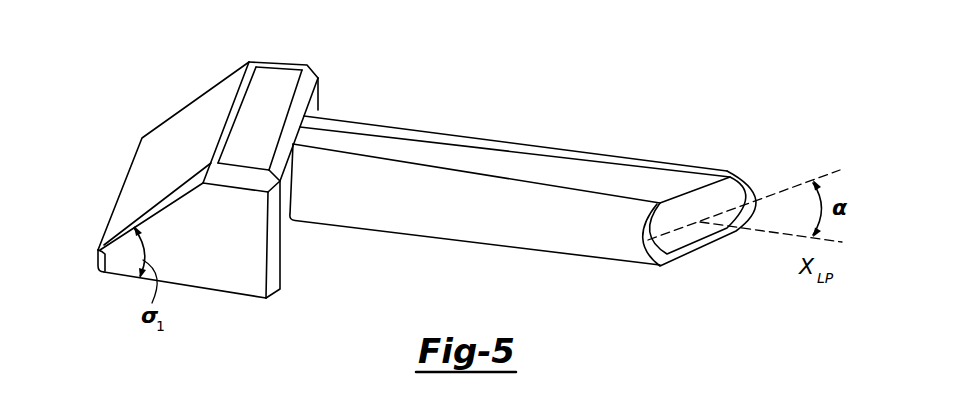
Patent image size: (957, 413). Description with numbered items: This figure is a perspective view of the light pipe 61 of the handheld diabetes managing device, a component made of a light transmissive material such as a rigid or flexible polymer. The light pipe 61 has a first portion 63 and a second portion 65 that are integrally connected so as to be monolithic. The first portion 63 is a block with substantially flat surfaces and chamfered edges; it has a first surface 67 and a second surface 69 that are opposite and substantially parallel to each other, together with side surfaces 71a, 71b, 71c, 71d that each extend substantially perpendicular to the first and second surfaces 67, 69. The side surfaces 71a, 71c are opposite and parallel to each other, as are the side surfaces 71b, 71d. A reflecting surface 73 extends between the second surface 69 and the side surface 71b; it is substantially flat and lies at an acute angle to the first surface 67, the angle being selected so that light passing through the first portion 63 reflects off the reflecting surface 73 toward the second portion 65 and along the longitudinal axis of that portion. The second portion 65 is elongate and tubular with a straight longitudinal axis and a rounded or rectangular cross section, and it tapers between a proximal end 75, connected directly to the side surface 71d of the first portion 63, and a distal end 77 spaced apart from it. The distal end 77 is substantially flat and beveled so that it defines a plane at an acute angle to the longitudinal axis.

The light pipe 61 is at (605, 100).
The first portion 63 is at (265, 75).
The second portion 65 is at (472, 158).
The first surface 67 is at (223, 294).
The second surface 69 is at (265, 129).
The side surface 71a is at (322, 92).
The side surface 71b is at (97, 262).
The side surface 71c is at (214, 253).
The side surface 71d is at (287, 248).
The reflecting surface 73 is at (176, 173).
The proximal end 75 is at (313, 140).
The distal end 77 is at (736, 196).